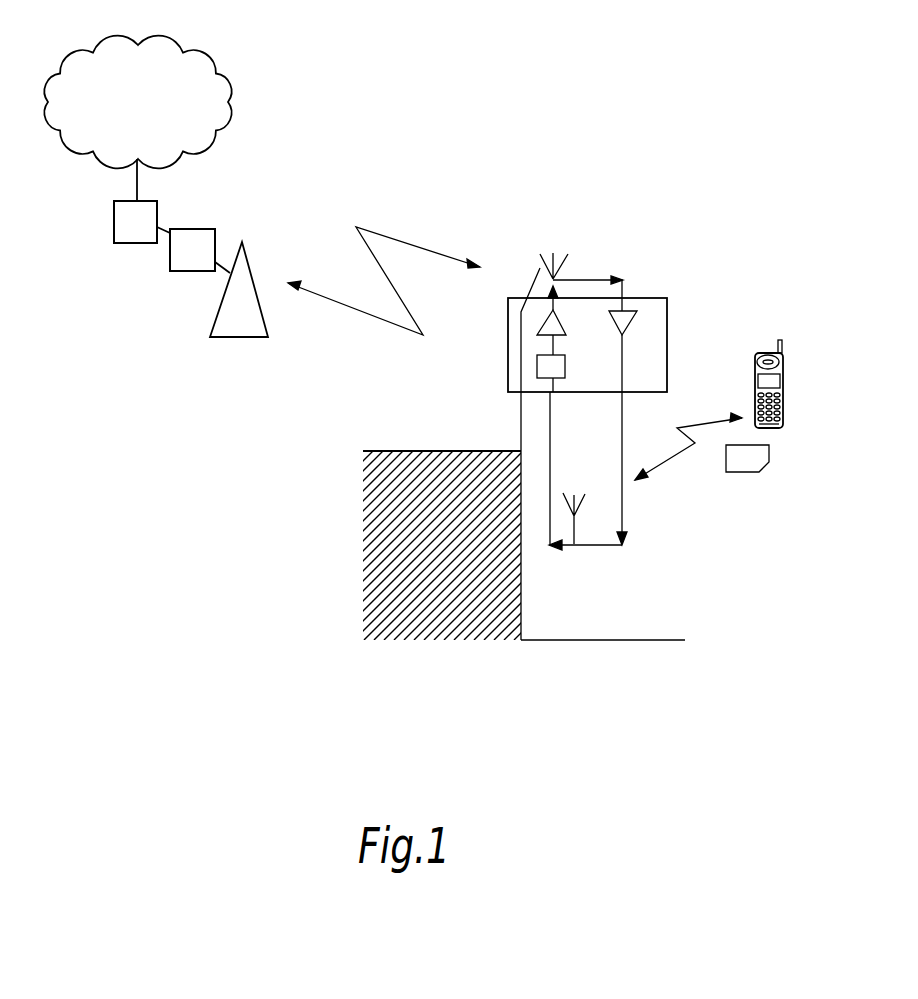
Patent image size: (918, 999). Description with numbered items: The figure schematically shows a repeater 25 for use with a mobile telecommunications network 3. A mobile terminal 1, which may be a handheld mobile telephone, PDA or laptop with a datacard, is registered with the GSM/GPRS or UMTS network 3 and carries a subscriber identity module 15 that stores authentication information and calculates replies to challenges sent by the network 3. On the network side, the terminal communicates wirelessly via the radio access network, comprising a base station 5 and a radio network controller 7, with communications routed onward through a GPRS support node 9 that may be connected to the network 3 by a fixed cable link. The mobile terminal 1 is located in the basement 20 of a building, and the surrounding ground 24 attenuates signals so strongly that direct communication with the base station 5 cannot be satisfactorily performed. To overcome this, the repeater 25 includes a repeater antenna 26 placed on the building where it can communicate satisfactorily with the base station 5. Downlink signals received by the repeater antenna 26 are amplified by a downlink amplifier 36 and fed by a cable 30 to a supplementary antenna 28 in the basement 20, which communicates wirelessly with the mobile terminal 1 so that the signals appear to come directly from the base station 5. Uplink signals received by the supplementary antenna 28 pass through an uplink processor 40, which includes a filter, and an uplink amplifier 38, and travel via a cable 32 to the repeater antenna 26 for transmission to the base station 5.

The mobile terminal 1 is at (785, 398).
The mobile telecommunications network 3 is at (208, 61).
The base station 5 is at (262, 300).
The radio network controller 7 is at (170, 263).
The GPRS support node 9 is at (114, 222).
The subscriber identity module 15 is at (737, 460).
The basement 20 is at (562, 596).
The ground 24 is at (386, 562).
The repeater 25 is at (505, 340).
The repeater antenna 26 is at (560, 272).
The supplementary antenna 28 is at (586, 502).
The cable 30 is at (624, 510).
The cable 32 is at (553, 415).
The downlink amplifier 36 is at (626, 306).
The uplink amplifier 38 is at (563, 328).
The uplink processor 40 is at (566, 365).